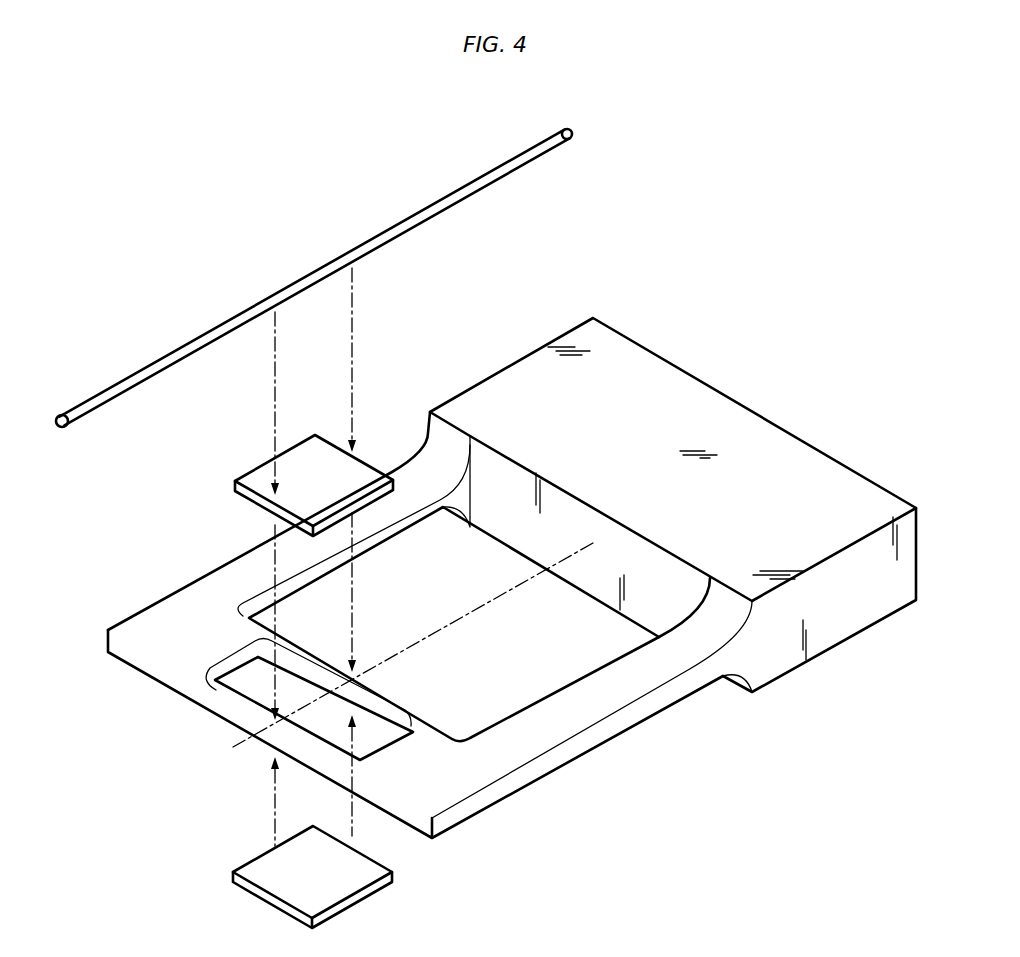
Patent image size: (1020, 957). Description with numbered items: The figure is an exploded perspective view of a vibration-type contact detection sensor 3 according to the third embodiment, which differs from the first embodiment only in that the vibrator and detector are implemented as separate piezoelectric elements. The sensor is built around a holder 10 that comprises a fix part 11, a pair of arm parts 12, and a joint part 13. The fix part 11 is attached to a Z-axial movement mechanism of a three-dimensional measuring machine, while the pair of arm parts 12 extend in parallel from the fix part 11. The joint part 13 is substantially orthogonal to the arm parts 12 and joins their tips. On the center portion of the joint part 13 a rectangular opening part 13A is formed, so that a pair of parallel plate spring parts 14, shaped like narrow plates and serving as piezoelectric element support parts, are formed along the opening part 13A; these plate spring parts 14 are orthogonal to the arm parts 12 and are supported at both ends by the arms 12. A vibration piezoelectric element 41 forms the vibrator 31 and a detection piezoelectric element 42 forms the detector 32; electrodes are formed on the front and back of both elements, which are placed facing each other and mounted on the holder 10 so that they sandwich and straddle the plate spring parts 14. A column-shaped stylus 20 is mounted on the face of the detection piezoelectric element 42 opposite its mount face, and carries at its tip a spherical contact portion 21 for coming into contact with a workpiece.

The vibration-type contact detection sensor 3 is at (707, 333).
The holder 10 is at (673, 505).
The fix part 11 is at (770, 440).
The arm parts 12 is at (208, 593).
The joint part 13 is at (428, 770).
The opening part 13A is at (228, 682).
The parallel plate spring parts 14 is at (237, 718).
The stylus 20 is at (305, 278).
The spherical contact portion 21 is at (60, 413).
The vibrator 31 is at (354, 885).
The detector 32 is at (302, 458).
The vibration piezoelectric element 41 is at (348, 903).
The detection piezoelectric element 42 is at (313, 445).